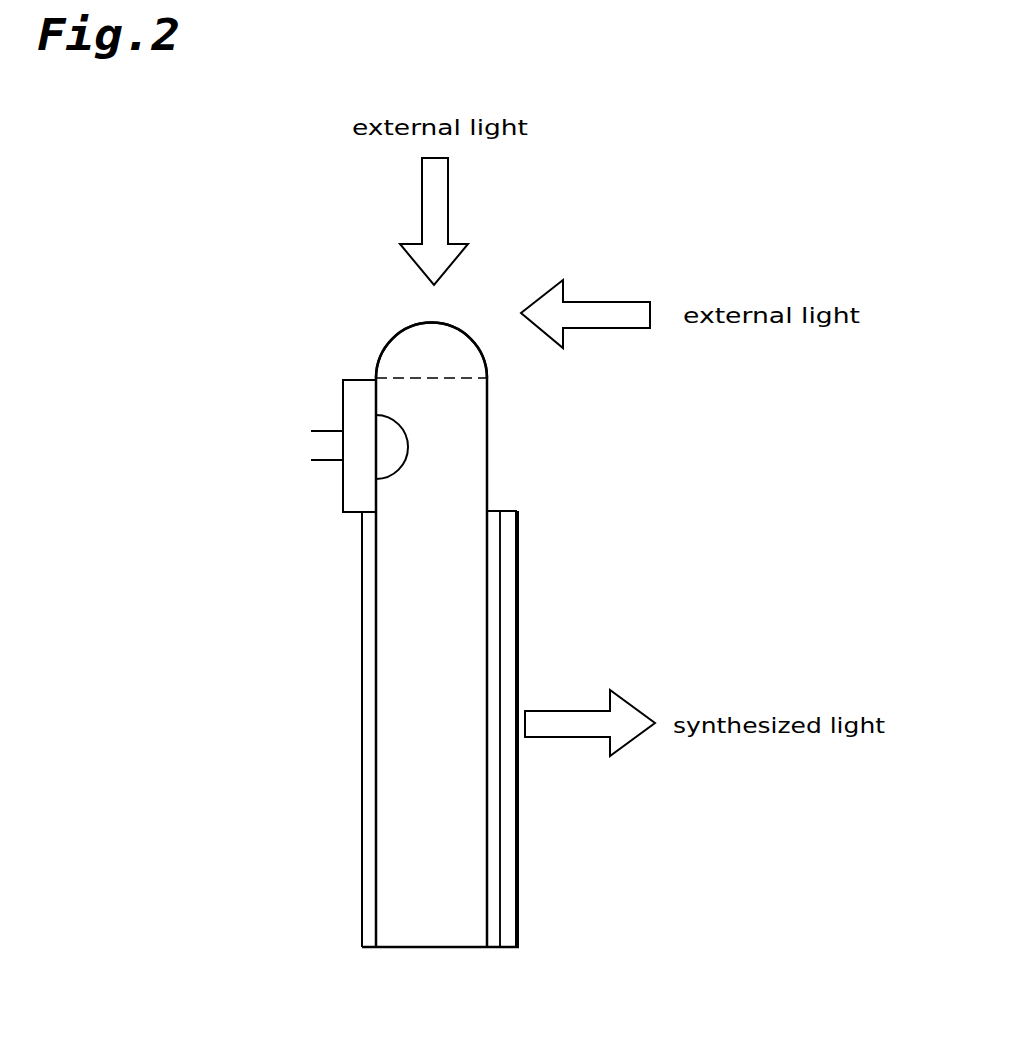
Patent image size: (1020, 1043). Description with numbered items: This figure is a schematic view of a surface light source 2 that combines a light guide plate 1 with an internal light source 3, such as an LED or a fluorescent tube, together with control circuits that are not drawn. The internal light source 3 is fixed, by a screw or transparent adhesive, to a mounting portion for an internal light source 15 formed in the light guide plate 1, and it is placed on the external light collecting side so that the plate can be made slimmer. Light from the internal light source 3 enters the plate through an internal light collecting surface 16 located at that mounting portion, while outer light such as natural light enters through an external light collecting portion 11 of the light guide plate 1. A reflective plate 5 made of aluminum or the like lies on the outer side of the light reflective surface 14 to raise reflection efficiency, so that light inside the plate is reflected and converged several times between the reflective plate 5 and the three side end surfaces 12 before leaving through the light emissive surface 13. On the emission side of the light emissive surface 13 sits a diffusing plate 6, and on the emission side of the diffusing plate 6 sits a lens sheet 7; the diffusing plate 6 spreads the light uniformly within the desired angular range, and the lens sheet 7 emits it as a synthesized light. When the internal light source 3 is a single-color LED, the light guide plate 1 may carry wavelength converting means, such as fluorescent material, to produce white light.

The light guide 1 is at (417, 839).
The light source side end 2 is at (428, 948).
The light emitting diode 3 is at (355, 415).
The reflecting layer 5 is at (372, 742).
The transparent layer 6 is at (492, 547).
The light diffusing layer 7 is at (508, 590).
The light receiving dome portion 11 is at (408, 353).
The end face 12 is at (419, 912).
The light exit surface 13 is at (487, 670).
The reflector 14 is at (377, 693).
The light path 15 is at (395, 422).
The LED chip 16 is at (407, 447).